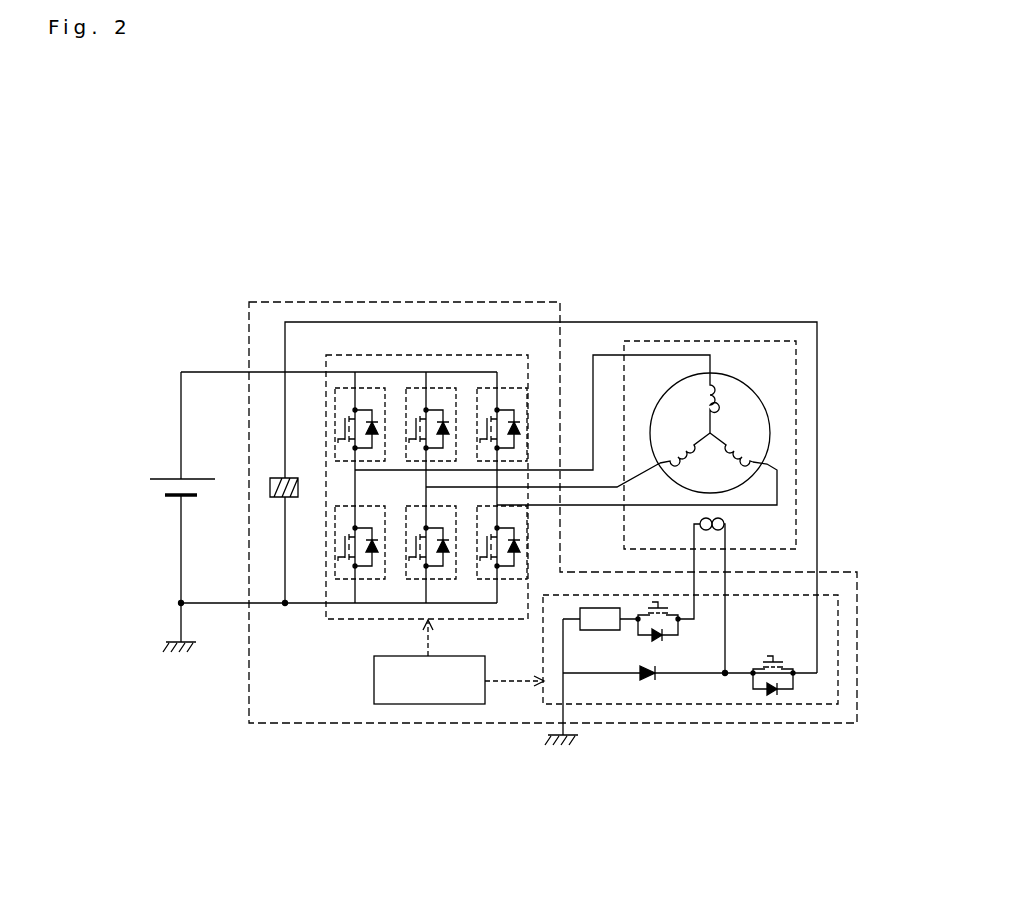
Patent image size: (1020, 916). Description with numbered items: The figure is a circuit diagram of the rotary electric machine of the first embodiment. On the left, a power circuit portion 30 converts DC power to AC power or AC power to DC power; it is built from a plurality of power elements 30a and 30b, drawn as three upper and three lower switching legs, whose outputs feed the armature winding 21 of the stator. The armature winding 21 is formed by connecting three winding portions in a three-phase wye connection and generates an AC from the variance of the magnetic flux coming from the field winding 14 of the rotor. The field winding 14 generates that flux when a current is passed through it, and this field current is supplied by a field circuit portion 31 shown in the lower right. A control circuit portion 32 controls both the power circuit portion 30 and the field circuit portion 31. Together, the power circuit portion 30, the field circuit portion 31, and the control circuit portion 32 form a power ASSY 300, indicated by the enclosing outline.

The power ASSY 300 is at (250, 332).
The power circuit portion 30 is at (433, 519).
The power element 30a is at (363, 389).
The power element 30b is at (345, 580).
The armature winding 21 is at (760, 402).
The field winding 14 is at (724, 522).
The field circuit portion 31 is at (712, 705).
The control circuit portion 32 is at (417, 683).